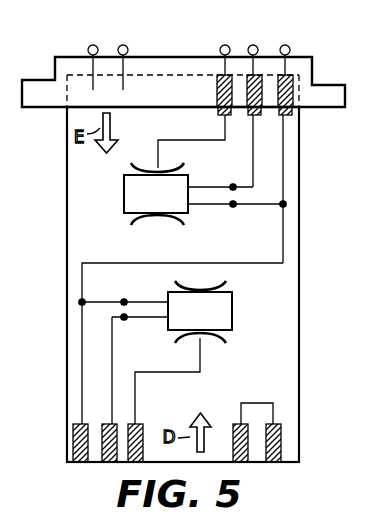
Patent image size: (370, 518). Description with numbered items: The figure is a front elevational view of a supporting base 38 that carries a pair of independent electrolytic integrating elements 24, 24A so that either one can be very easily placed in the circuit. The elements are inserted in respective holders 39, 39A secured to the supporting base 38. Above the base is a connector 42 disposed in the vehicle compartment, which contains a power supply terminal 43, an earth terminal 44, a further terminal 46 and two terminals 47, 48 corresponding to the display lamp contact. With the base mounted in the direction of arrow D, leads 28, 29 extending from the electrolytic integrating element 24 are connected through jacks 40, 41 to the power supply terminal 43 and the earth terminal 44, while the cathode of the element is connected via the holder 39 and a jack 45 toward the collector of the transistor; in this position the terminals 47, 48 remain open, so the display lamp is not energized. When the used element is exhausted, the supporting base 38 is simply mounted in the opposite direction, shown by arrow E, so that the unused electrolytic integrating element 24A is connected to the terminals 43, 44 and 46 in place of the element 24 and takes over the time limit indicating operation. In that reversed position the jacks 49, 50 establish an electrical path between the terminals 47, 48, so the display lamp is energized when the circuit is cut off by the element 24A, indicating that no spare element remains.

The connector 42 is at (345, 87).
The supporting base 38 is at (301, 273).
The terminal 47 is at (89, 45).
The terminal 48 is at (121, 46).
The terminal 46 is at (222, 46).
The power supply terminal 43 is at (251, 46).
The earth terminal 44 is at (287, 46).
The jack 45 is at (217, 112).
The jack 40 is at (250, 117).
The jack 41 is at (296, 116).
The electrolytic integrating element 24 is at (124, 192).
The holder 39 is at (156, 164).
The lead 28 is at (214, 186).
The lead 29 is at (199, 206).
The electrolytic integrating element 24A is at (233, 310).
The holder 39A is at (212, 340).
The jack 49 is at (232, 428).
The jack 50 is at (282, 433).